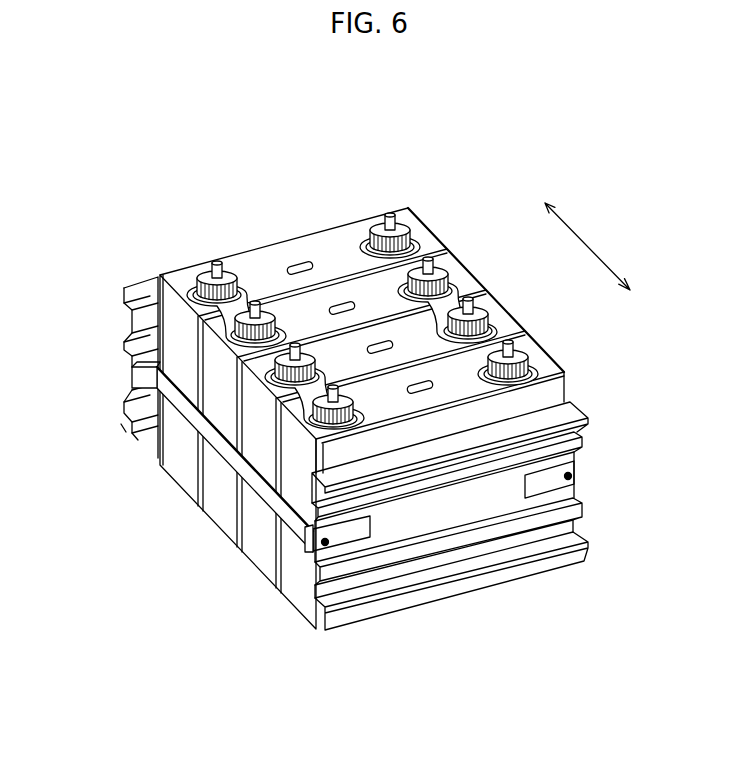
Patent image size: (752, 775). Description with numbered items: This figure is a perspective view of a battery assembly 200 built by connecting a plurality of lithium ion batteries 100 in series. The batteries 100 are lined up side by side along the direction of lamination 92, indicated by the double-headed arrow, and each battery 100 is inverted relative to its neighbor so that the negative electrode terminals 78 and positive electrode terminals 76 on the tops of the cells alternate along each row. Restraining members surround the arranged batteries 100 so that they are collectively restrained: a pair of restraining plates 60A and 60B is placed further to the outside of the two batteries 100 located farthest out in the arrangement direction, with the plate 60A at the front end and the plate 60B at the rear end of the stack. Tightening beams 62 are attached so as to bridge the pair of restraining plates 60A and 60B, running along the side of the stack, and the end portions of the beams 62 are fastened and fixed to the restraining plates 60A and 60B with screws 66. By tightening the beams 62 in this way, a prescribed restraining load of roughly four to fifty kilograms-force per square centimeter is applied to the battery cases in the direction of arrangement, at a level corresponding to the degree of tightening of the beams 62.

The battery assembly 200 is at (422, 149).
The lithium secondary battery 100 is at (367, 290).
The positive electrode terminal 76 is at (255, 302).
The negative electrode terminal 78 is at (214, 262).
The restraining plate 60A is at (548, 510).
The restraining plate 60B is at (124, 290).
The tightening beam 62 is at (203, 423).
The screw 66 is at (570, 476).
The direction of lamination 92 is at (587, 246).